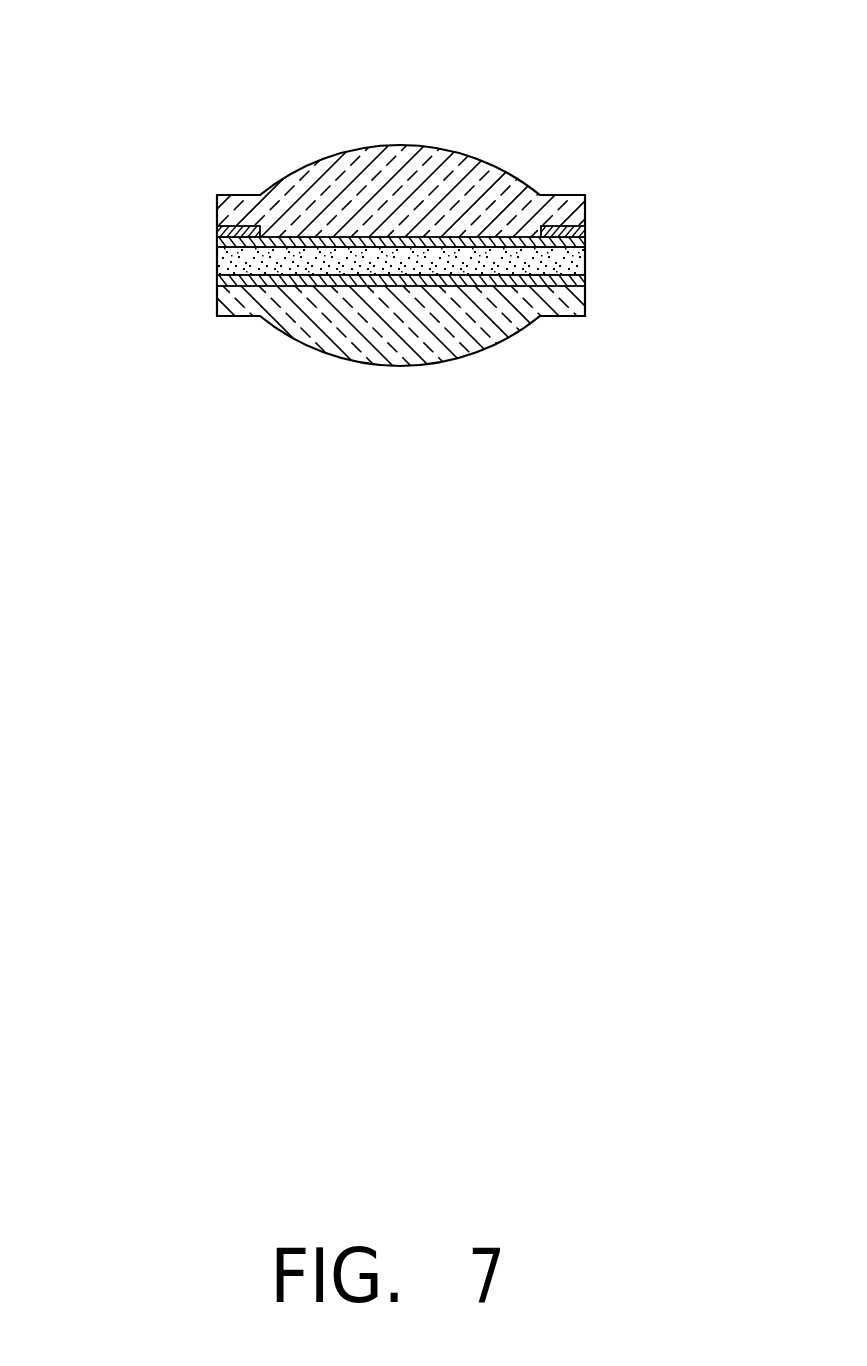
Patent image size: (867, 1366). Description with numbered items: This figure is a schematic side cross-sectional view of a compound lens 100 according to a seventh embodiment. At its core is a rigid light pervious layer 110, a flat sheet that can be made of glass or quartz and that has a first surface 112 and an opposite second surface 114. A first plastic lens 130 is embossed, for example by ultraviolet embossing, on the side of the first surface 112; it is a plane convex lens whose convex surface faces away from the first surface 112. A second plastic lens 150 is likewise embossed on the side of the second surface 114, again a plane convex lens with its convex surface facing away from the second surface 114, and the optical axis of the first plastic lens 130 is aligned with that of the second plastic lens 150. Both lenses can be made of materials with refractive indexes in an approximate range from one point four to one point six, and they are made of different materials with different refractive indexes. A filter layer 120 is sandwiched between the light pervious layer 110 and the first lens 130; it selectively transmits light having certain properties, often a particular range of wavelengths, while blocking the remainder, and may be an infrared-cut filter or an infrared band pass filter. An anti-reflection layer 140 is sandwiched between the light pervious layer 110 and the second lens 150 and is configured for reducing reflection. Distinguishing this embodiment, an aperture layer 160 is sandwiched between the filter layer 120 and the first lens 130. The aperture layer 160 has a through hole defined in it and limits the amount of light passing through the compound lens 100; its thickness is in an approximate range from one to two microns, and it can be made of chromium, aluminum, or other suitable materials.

The compound lens 100 is at (450, 60).
The rigid light pervious layer 110 is at (217, 263).
The first surface 112 is at (545, 234).
The second surface 114 is at (552, 281).
The filter layer 120 is at (217, 242).
The first plastic lens 130 is at (330, 193).
The anti-reflection layer 140 is at (245, 280).
The second plastic lens 150 is at (325, 318).
The aperture layer 160 is at (217, 232).